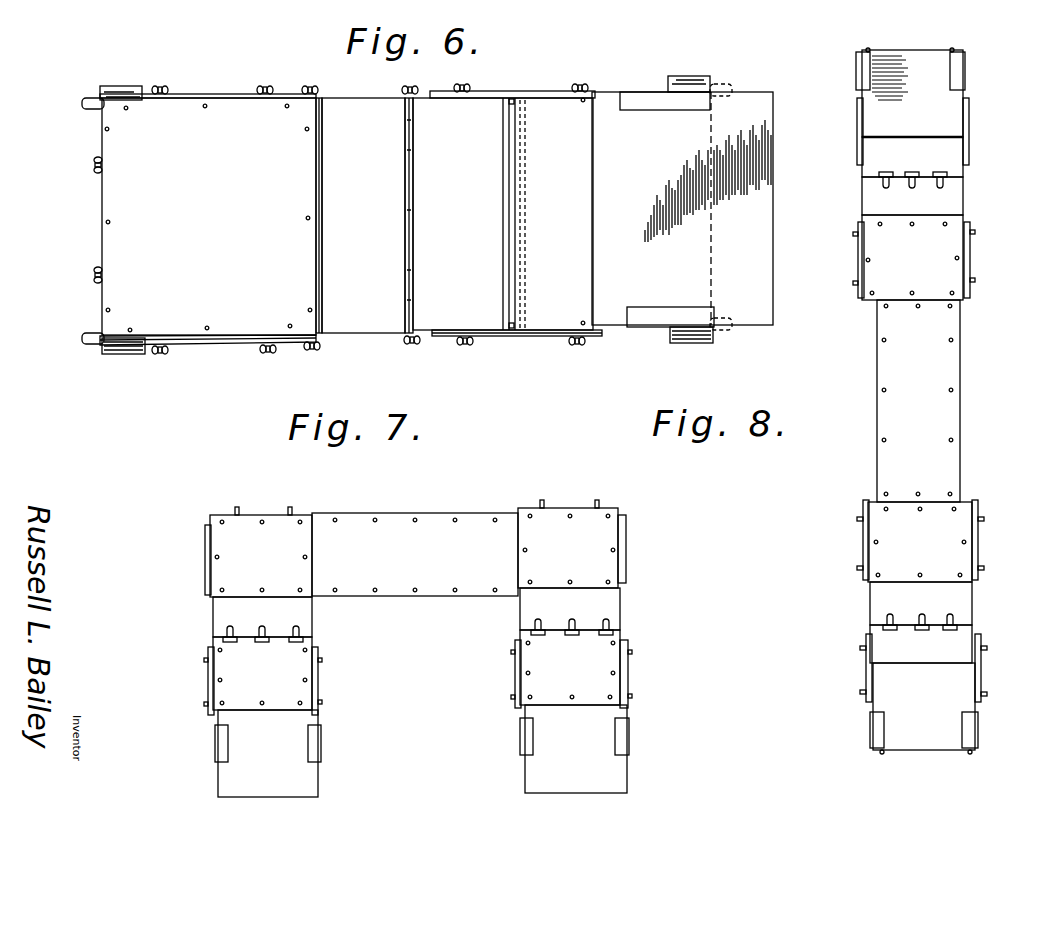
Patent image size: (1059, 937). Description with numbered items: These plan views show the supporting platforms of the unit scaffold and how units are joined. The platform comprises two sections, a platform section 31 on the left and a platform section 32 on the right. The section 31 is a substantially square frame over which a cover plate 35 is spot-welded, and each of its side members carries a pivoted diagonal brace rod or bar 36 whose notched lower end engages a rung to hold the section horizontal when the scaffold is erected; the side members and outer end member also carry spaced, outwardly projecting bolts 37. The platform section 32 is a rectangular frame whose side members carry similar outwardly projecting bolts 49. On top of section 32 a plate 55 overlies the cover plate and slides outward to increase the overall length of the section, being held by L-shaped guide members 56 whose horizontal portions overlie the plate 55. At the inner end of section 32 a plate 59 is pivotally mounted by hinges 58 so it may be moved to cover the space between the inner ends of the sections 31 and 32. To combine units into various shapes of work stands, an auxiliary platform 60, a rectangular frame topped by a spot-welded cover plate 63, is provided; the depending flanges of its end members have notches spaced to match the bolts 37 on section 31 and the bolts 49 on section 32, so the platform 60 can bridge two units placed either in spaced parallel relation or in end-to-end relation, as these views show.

In FIG. 6, the platform section 31 is at (214, 118).
In FIG. 7, the platform section 31 is at (264, 514).
In FIG. 8, the platform section 31 is at (950, 245).
In FIG. 6, the platform section 32 is at (522, 108).
In FIG. 7, the platform section 32 is at (298, 665).
In FIG. 8, the platform section 32 is at (953, 146).
In FIG. 6, the cover plate 35 is at (199, 220).
In FIG. 7, the cover plate 35 is at (415, 548).
In FIG. 8, the cover plate 35 is at (918, 398).
In FIG. 8, the brace rod or bar 36 is at (856, 74).
In FIG. 6, the bolts 37 is at (178, 81).
In FIG. 7, the bolts 37 is at (236, 508).
In FIG. 8, the bolts 37 is at (853, 234).
In FIG. 6, the bolts 49 is at (470, 77).
In FIG. 7, the bolts 49 is at (204, 660).
In FIG. 8, the bolts 49 is at (857, 108).
In FIG. 6, the plate 55 is at (682, 208).
In FIG. 7, the plate 55 is at (422, 751).
In FIG. 8, the plate 55 is at (918, 401).
In FIG. 6, the L-shaped guide members 56 is at (645, 103).
In FIG. 7, the L-shaped guide members 56 is at (215, 744).
In FIG. 8, the L-shaped guide members 56 is at (962, 82).
In FIG. 6, the hinges 58 is at (405, 130).
In FIG. 7, the hinges 58 is at (294, 648).
In FIG. 8, the hinges 58 is at (938, 172).
In FIG. 6, the plate 59 is at (507, 213).
In FIG. 7, the plate 59 is at (416, 612).
In FIG. 8, the plate 59 is at (917, 401).
In FIG. 7, the auxiliary platform 60 is at (426, 500).
In FIG. 8, the auxiliary platform 60 is at (962, 377).
In FIG. 7, the cover plate 63 is at (415, 554).
In FIG. 8, the cover plate 63 is at (918, 401).